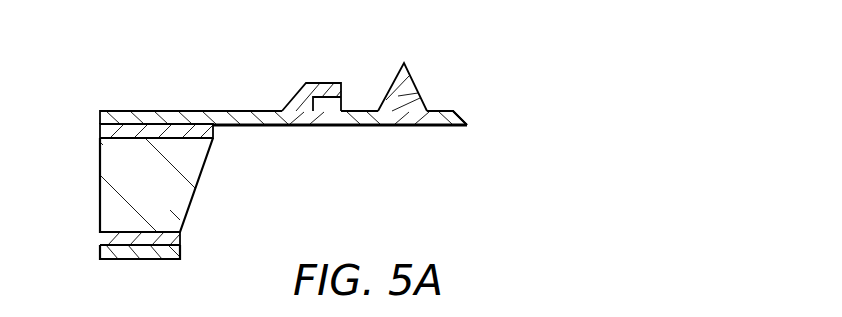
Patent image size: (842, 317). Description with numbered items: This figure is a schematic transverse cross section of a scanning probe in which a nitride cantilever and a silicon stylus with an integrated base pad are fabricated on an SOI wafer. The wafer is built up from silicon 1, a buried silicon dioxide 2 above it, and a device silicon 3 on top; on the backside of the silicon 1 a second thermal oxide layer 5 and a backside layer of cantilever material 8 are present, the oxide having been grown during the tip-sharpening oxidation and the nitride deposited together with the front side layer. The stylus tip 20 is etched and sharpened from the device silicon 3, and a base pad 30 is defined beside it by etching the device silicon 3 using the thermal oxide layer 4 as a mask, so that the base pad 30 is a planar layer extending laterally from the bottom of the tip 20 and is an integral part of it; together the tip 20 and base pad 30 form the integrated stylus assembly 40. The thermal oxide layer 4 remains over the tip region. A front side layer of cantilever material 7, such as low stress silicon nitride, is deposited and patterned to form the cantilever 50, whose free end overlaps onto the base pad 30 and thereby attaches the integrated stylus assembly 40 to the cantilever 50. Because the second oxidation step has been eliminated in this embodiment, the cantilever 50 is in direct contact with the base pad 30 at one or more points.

The silicon 1 is at (99, 197).
The buried silicon dioxide 2 is at (99, 129).
The device silicon 3 is at (353, 123).
The thermal oxide layer 4 is at (343, 104).
The second thermal oxide layer 5 is at (99, 237).
The cantilever material 7 is at (99, 119).
The cantilever material 8 is at (99, 250).
The stylus tip 20 is at (407, 72).
The base pad 30 is at (453, 118).
The integrated stylus assembly 40 is at (488, 78).
The cantilever 50 is at (192, 100).